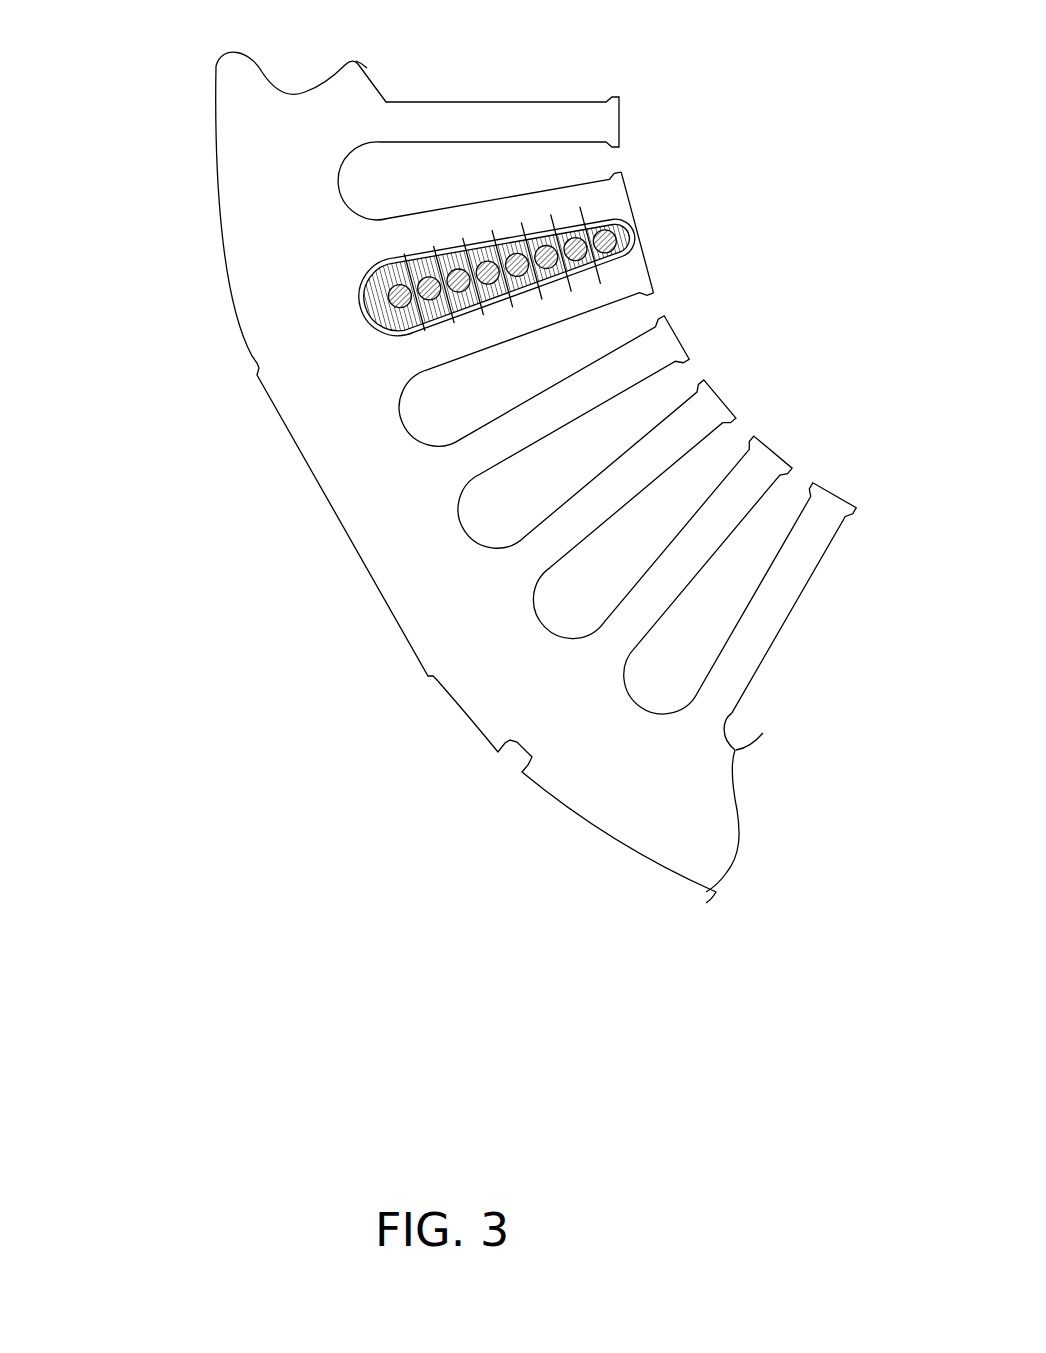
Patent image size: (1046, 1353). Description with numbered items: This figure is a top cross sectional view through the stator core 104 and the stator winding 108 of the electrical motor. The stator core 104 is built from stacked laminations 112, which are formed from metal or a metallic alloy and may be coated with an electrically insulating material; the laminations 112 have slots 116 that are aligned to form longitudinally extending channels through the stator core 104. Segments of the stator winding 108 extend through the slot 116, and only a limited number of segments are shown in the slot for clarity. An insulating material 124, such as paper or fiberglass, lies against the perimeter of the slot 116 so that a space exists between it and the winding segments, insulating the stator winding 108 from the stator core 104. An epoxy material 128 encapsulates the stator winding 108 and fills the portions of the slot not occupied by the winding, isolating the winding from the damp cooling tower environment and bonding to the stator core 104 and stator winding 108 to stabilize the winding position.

The stator core 104 is at (255, 192).
The stator winding 108 is at (493, 257).
The laminations 112 is at (283, 360).
The slots 116 is at (420, 180).
The insulating material 124 is at (452, 322).
The epoxy material 128 is at (640, 233).